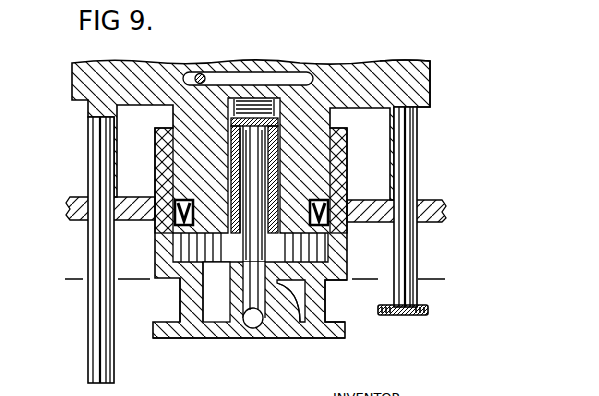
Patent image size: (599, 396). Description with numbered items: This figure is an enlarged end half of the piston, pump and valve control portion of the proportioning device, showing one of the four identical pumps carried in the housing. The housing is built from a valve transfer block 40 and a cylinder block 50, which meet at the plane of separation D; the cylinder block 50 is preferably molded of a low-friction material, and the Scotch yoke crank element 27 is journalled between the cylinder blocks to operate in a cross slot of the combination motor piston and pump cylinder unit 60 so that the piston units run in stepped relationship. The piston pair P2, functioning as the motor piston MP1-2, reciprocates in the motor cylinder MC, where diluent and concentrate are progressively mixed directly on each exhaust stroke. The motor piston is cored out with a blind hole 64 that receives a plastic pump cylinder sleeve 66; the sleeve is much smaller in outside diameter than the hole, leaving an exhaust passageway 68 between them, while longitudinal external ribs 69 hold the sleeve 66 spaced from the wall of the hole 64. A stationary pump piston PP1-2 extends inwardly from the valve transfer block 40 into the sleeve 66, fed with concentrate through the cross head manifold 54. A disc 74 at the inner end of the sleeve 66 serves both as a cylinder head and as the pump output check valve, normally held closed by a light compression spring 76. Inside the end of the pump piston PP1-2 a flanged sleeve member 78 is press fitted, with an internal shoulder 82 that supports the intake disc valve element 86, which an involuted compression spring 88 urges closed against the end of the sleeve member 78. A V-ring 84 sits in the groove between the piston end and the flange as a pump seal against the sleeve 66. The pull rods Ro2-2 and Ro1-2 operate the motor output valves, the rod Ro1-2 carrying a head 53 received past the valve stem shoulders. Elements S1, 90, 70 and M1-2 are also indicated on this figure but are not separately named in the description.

The piston pair P2 is at (82, 80).
The combination motor piston and pump cylinder unit 60 is at (383, 62).
The Scotch yoke crank element 27 is at (200, 73).
The disc 74 is at (258, 103).
The light compression spring 76 is at (313, 67).
The spring seat S1 is at (290, 74).
The V-ring 84 is at (228, 170).
The flanged sleeve member 78 is at (228, 190).
The disc valve element 86 is at (283, 118).
The exhaust passageway 68 is at (283, 136).
The internal shoulder 82 is at (283, 160).
The blind hole 64 is at (283, 182).
The motor piston MP1-2 is at (187, 177).
The pull rod Ro2-2 is at (102, 185).
The cylinder block 50 is at (68, 209).
The pump cylinder sleeve 66 is at (198, 243).
The right ribbed insert 90 is at (330, 243).
The motor cylinder MC is at (197, 250).
The longitudinal external rib 69 is at (205, 262).
The involuted compression spring 88 is at (235, 258).
The right column 70 is at (325, 291).
The plane of separation D is at (264, 279).
The base foot M1-2 is at (205, 276).
The cross head manifold 54 is at (252, 327).
The valve transfer block 40 is at (278, 326).
The pump piston PP1-2 is at (297, 330).
The pull rod Ro1-2 is at (400, 290).
The head 53 is at (405, 313).